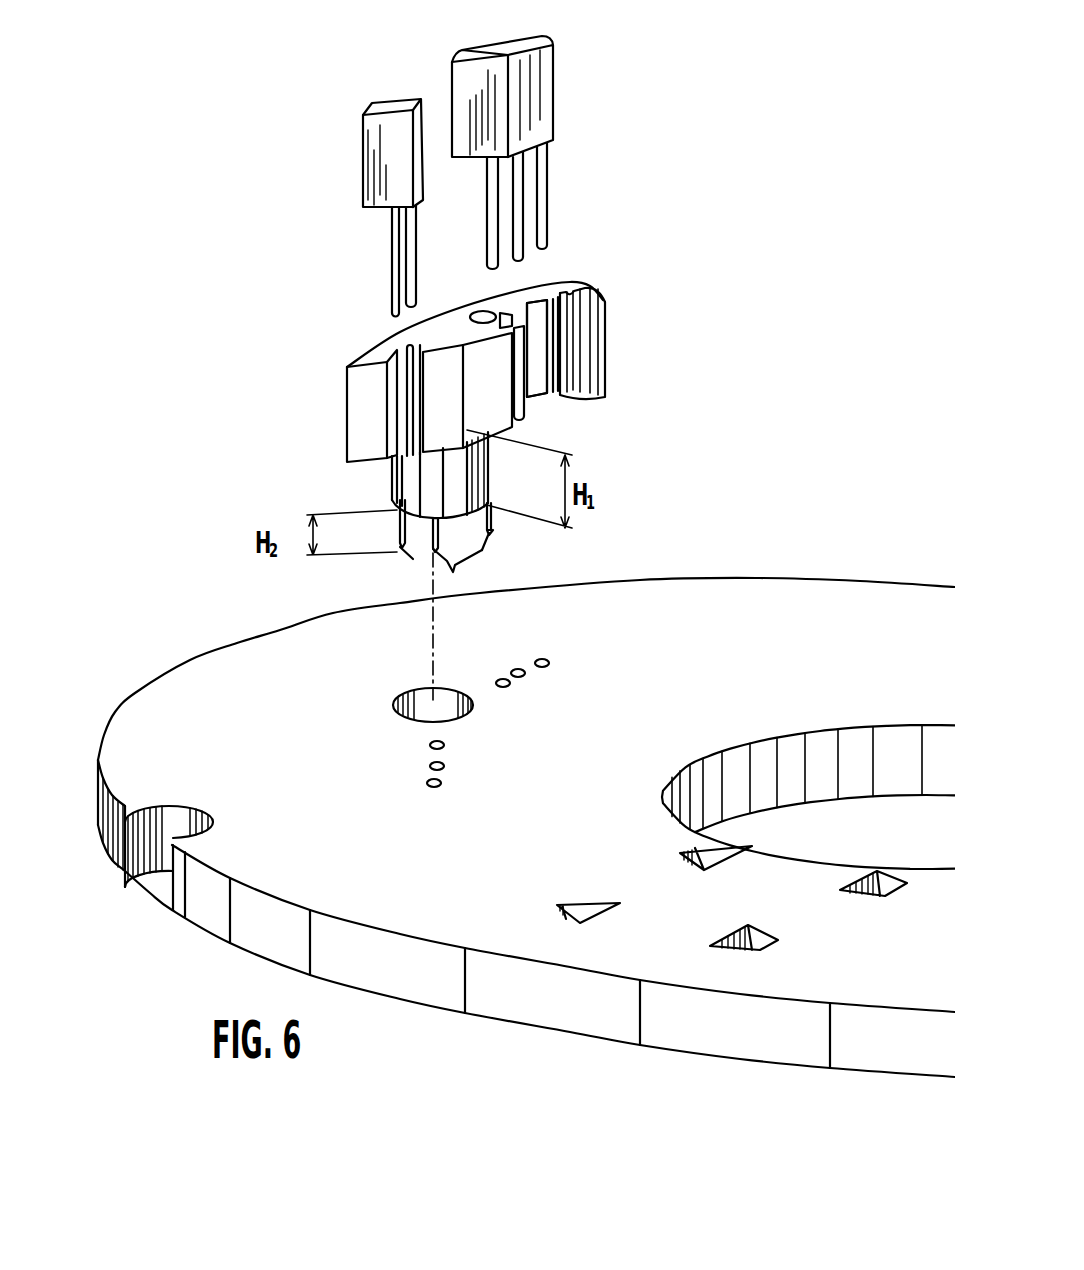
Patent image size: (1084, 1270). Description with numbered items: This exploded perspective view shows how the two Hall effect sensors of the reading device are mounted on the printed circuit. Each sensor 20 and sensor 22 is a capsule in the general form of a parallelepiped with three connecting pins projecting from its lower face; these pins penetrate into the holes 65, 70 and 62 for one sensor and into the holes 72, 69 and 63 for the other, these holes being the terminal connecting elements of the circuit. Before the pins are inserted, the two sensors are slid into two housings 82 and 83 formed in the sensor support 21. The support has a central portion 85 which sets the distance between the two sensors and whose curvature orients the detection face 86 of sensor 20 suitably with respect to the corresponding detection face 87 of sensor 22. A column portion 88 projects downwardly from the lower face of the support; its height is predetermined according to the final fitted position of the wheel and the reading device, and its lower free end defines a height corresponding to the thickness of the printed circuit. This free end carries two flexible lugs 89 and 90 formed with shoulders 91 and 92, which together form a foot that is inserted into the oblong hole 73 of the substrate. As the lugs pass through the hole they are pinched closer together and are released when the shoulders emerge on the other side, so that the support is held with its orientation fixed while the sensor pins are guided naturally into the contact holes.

The sensor 20 is at (388, 107).
The sensor 22 is at (497, 55).
The sensor support 21 is at (380, 352).
The detection face 86 is at (543, 110).
The detection face 87 is at (417, 165).
The central portion 85 is at (482, 405).
The housing 82 is at (565, 385).
The housing 83 is at (418, 453).
The column portion 88 is at (513, 452).
The flexible lug 89 is at (413, 559).
The flexible lug 90 is at (453, 572).
The shoulder 91 is at (397, 543).
The shoulder 92 is at (490, 530).
The hole 73 is at (413, 700).
The hole 65 is at (550, 660).
The hole 70 is at (525, 675).
The hole 62 is at (506, 690).
The hole 72 is at (444, 746).
The hole 69 is at (444, 767).
The hole 63 is at (434, 790).